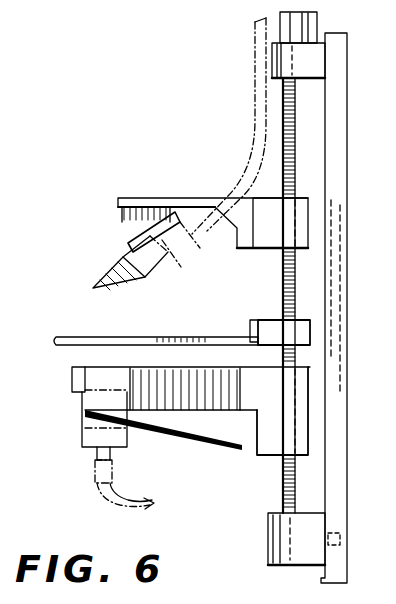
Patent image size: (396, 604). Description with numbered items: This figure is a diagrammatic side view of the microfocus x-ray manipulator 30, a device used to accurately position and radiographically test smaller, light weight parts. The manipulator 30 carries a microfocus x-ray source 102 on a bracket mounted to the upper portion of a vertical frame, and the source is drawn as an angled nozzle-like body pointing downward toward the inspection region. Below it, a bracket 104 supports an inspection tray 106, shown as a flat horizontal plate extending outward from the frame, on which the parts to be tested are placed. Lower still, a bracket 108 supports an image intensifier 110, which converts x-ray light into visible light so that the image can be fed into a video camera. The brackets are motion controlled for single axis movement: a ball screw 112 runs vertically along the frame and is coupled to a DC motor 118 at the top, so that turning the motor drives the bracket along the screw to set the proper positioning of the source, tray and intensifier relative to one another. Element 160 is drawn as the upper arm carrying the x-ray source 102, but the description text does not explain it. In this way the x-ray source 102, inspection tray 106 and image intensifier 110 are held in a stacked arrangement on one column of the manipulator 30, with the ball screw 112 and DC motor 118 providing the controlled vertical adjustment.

The microfocus x-ray manipulator 30 is at (125, 122).
The microfocus x-ray source 102 is at (192, 254).
The bracket 104 is at (264, 320).
The inspection tray 106 is at (145, 337).
The bracket 108 is at (82, 369).
The image intensifier 110 is at (82, 438).
The ball screw 112 is at (327, 128).
The DC motor 118 is at (317, 24).
The arm 160 is at (207, 197).